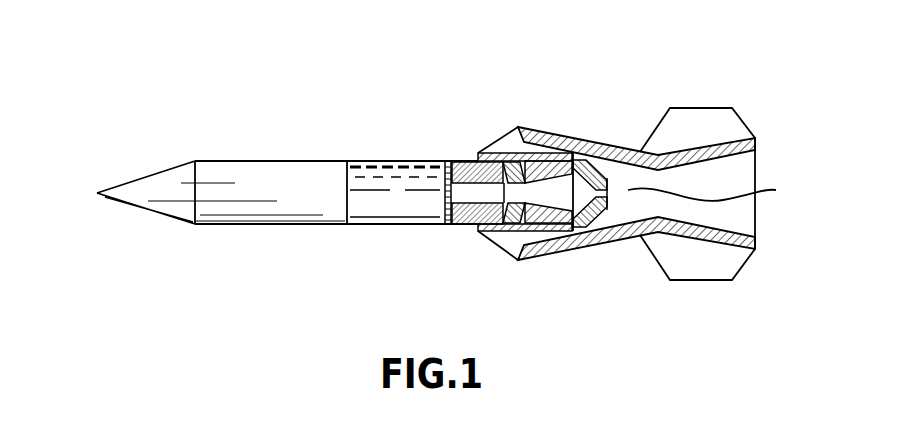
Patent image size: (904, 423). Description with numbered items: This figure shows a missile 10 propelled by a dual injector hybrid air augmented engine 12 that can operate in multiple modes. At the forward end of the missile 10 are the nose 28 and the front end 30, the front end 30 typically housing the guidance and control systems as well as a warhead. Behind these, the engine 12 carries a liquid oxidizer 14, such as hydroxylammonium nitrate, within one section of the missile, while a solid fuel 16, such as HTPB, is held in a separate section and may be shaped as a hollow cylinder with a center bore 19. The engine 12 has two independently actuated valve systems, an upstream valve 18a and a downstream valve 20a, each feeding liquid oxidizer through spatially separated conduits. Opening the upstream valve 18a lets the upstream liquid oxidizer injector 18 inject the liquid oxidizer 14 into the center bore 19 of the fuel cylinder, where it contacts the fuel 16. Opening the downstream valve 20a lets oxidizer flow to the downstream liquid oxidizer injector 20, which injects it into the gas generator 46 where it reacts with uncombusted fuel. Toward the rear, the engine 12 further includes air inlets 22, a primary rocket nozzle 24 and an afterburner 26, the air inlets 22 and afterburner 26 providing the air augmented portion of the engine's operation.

The missile 10 is at (287, 159).
The dual injector hybrid air augmented engine 12 is at (582, 181).
The liquid oxidizer 14 is at (382, 170).
The fuel 16 is at (466, 162).
The upstream liquid oxidizer injector 18 is at (450, 162).
The upstream valve 18a is at (433, 162).
The center bore 19 is at (467, 200).
The downstream liquid oxidizer injector 20 is at (550, 193).
The downstream valve 20a is at (507, 162).
The air inlets 22 is at (538, 247).
The primary rocket nozzle 24 is at (602, 187).
The afterburner 26 is at (716, 191).
The nose 28 is at (162, 200).
The front end 30 is at (245, 210).
The gas generator 46 is at (571, 150).